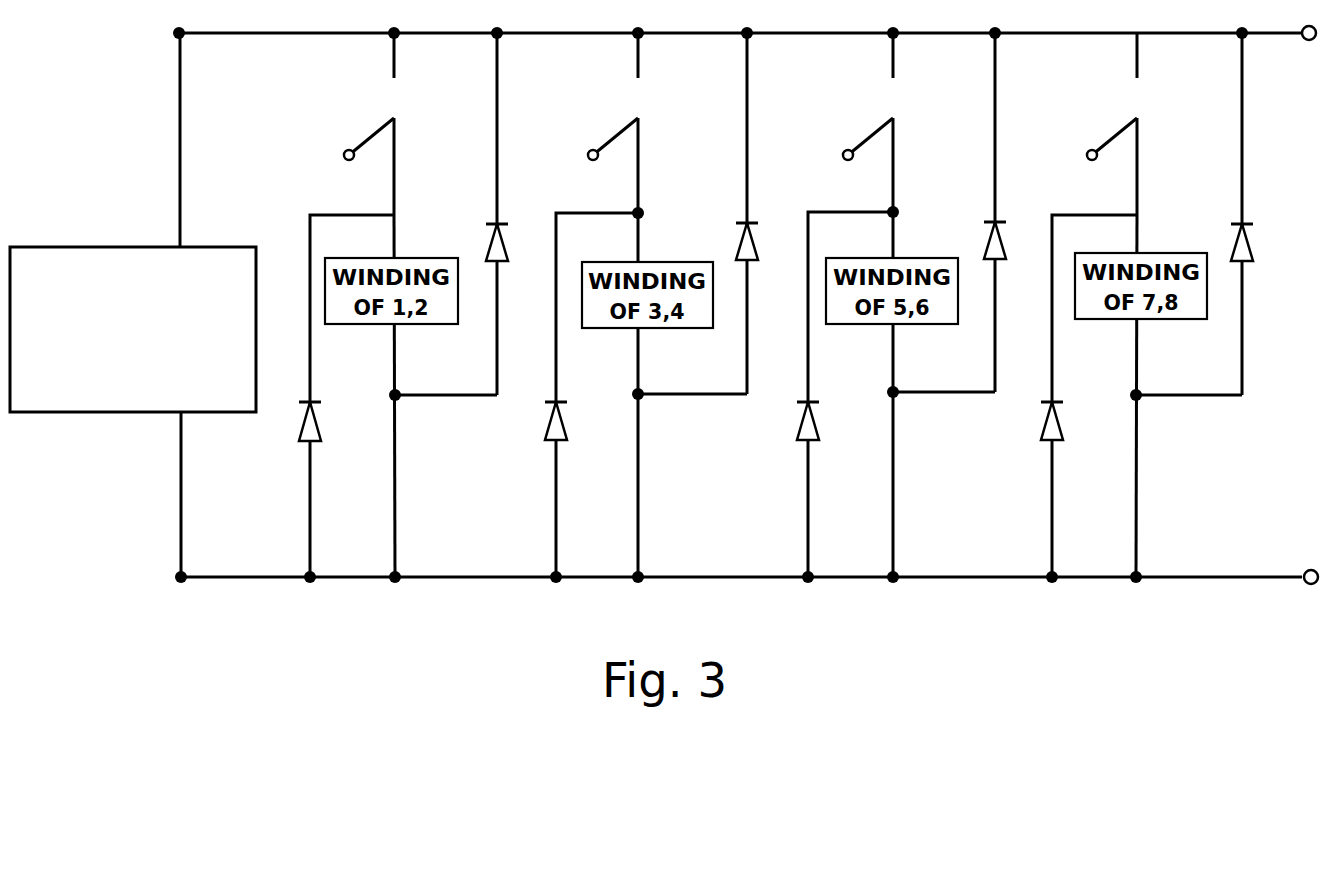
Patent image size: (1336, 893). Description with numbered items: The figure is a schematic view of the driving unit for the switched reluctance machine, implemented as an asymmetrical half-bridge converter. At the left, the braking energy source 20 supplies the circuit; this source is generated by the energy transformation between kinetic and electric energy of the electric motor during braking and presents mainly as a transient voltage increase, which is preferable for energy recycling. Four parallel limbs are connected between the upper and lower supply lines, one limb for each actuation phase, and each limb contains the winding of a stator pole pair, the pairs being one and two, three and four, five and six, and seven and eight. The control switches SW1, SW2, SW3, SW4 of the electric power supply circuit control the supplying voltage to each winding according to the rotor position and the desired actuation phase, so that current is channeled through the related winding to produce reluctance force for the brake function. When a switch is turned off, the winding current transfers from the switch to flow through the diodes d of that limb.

The braking energy source 20 is at (118, 247).
The control switch SW1 is at (362, 124).
The control switch SW2 is at (602, 123).
The control switch SW3 is at (860, 122).
The control switch SW4 is at (1102, 124).
The diode d is at (391, 328).